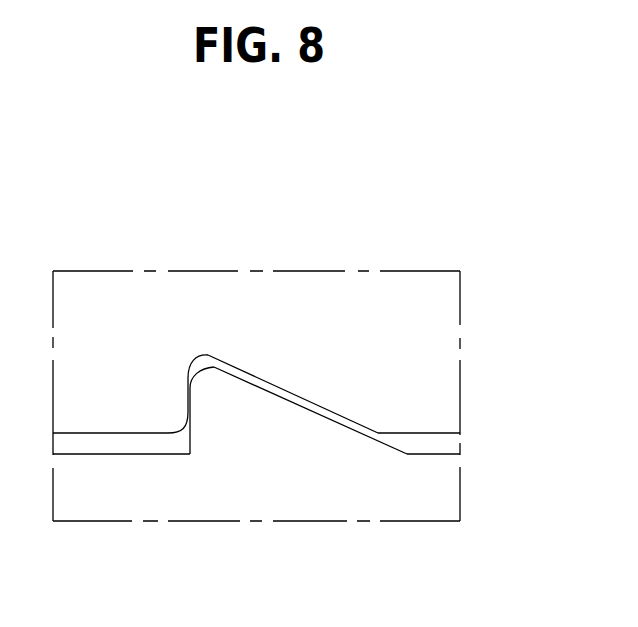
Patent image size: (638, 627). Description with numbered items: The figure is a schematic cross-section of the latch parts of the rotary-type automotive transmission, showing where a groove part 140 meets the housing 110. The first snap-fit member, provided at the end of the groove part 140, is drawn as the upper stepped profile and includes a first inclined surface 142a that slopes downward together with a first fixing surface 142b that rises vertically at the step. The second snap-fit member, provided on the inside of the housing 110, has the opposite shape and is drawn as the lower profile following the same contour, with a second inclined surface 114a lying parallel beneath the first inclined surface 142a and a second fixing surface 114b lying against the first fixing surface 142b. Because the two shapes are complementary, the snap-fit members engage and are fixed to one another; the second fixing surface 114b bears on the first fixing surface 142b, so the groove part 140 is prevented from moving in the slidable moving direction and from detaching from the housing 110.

The housing 110 is at (400, 502).
The second inclined surface 114a is at (305, 410).
The second fixing surface 114b is at (192, 437).
The groove part 140 is at (400, 297).
The first inclined surface 142a is at (276, 385).
The first fixing surface 142b is at (188, 383).